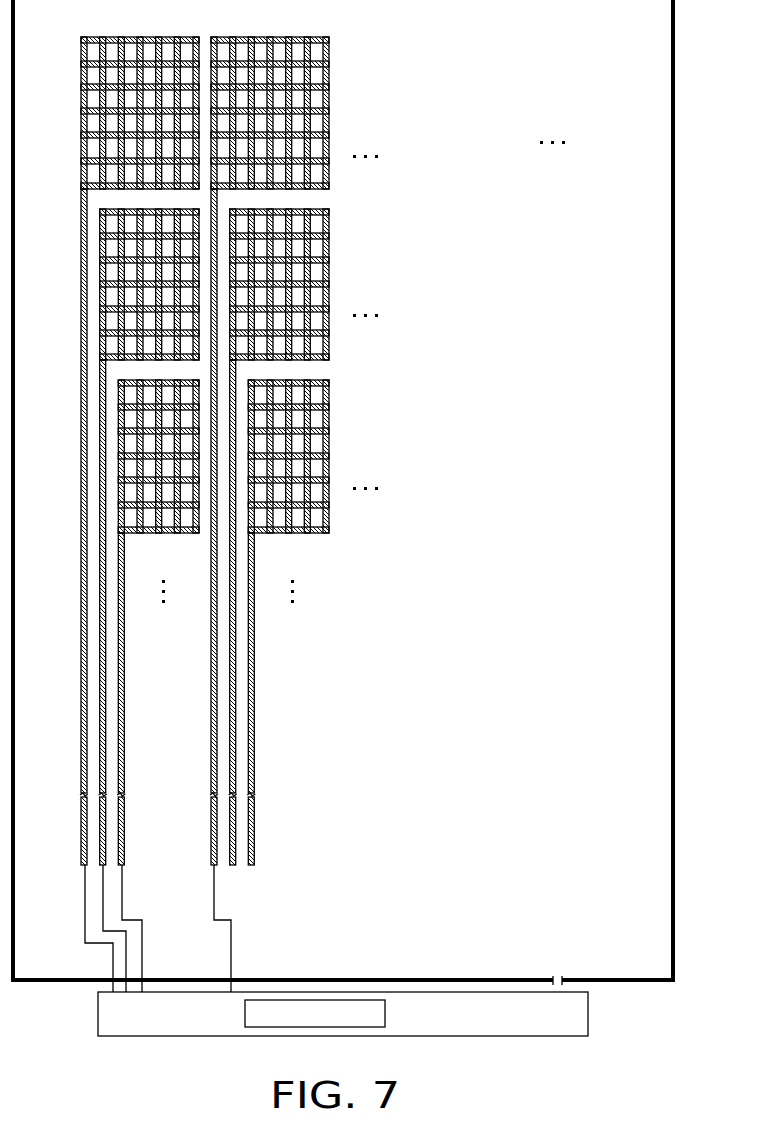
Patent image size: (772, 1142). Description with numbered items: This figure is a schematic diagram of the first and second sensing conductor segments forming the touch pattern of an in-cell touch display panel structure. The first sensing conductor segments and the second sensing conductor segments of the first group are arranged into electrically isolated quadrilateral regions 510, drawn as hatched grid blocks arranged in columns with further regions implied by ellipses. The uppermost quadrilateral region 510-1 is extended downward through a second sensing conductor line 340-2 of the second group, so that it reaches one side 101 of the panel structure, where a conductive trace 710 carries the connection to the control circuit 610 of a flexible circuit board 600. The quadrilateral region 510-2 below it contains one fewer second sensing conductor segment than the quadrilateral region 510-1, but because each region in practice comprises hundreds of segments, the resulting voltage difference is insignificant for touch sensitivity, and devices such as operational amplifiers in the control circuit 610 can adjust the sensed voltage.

The side of the in-cell touch display panel structure 101 is at (52, 983).
The quadrilateral region 510-1 is at (81, 114).
The quadrilateral region 510-2 is at (100, 285).
The quadrilateral region 510 is at (330, 110).
The second sensing conductor segment of the second group 340-2 is at (82, 416).
The conductive trace 710 is at (84, 908).
The flexible circuit board 600 is at (588, 1016).
The control circuit 610 is at (386, 1016).